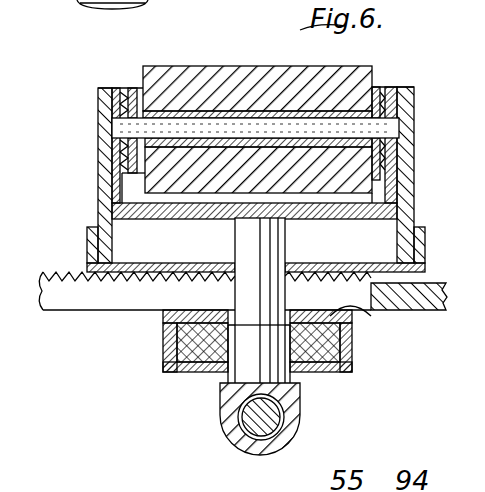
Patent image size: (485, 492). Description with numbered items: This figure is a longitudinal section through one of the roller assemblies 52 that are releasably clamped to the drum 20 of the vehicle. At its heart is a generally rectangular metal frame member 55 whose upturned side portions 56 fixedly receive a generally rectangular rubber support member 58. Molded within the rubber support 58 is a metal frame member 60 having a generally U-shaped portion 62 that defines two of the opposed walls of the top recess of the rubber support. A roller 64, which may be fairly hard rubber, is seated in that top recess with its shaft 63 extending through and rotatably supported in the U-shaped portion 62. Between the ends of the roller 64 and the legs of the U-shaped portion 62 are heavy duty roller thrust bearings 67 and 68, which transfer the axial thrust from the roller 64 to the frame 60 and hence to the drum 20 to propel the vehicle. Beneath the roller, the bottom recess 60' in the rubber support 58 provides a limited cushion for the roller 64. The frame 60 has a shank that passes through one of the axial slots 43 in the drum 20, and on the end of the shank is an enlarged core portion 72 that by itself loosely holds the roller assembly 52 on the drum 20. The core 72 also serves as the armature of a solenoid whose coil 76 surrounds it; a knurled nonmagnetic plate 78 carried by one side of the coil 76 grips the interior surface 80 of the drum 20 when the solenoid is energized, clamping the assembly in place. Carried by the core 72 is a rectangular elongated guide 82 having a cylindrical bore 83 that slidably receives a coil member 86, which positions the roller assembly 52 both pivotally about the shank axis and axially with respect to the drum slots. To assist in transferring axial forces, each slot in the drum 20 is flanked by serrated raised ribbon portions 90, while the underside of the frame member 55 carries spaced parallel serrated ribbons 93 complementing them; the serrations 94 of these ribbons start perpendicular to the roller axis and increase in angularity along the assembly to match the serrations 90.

The drum 20 is at (72, 311).
The slot 43 is at (104, 311).
The roller assembly 52 is at (80, 153).
The metal frame member 55 is at (148, 262).
The upturned side portion 56 is at (86, 246).
The rubber support member 58 is at (100, 118).
The metal frame member 60 is at (281, 300).
The bottom recess 60' is at (222, 163).
The U-shaped portion 62 is at (402, 136).
The shaft 63 is at (176, 132).
The roller 64 is at (245, 78).
The roller thrust bearing 67 is at (133, 88).
The roller thrust bearing 68 is at (382, 87).
The core portion 72 is at (245, 352).
The coil 76 is at (373, 362).
The knurled nonmagnetic plate 78 is at (360, 311).
The interior surface 80 is at (146, 311).
The guide 82 is at (290, 397).
The cylindrical bore 83 is at (221, 418).
The coil member 86 is at (262, 418).
The serrated raised ribbon portion 90 is at (78, 274).
The serrated ribbon 93 is at (272, 478).
The serration 94 is at (222, 282).